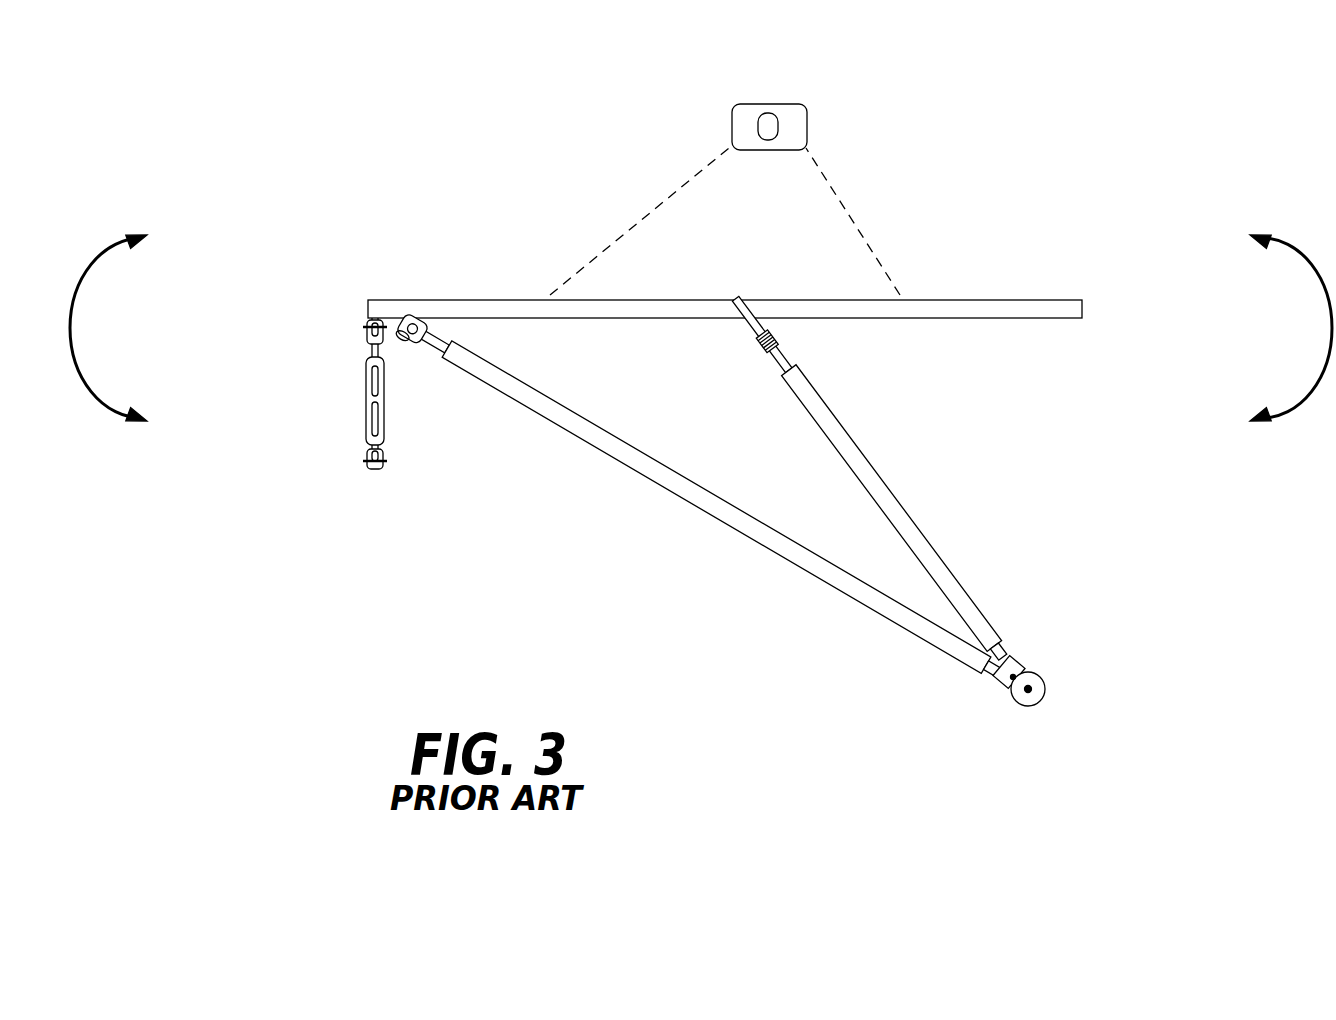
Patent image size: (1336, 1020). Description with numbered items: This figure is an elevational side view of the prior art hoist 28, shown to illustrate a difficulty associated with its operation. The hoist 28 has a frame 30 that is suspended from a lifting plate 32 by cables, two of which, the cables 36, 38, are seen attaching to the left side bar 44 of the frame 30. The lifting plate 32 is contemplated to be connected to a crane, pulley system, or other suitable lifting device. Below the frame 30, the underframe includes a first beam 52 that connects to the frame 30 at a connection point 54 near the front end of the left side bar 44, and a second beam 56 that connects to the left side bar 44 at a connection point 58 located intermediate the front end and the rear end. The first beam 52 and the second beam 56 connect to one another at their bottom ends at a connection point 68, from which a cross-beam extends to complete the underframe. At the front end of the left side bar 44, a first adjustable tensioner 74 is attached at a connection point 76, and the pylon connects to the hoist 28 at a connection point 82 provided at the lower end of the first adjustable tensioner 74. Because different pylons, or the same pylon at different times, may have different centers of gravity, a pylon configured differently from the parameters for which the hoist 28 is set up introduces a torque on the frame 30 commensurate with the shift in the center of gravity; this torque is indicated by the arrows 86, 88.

The hoist 28 is at (997, 197).
The frame 30 is at (993, 292).
The lifting plate 32 is at (808, 107).
The cable 36 is at (632, 218).
The cable 38 is at (845, 196).
The left side bar 44 is at (1013, 318).
The first beam 52 is at (828, 592).
The connection point 54 is at (412, 342).
The second beam 56 is at (930, 567).
The connection point 58 is at (762, 336).
The connection point 68 is at (1017, 693).
The first adjustable tensioner 74 is at (367, 398).
The connection point 76 is at (368, 328).
The connection point 82 is at (368, 466).
The arrow 86 is at (78, 358).
The arrow 88 is at (1325, 352).